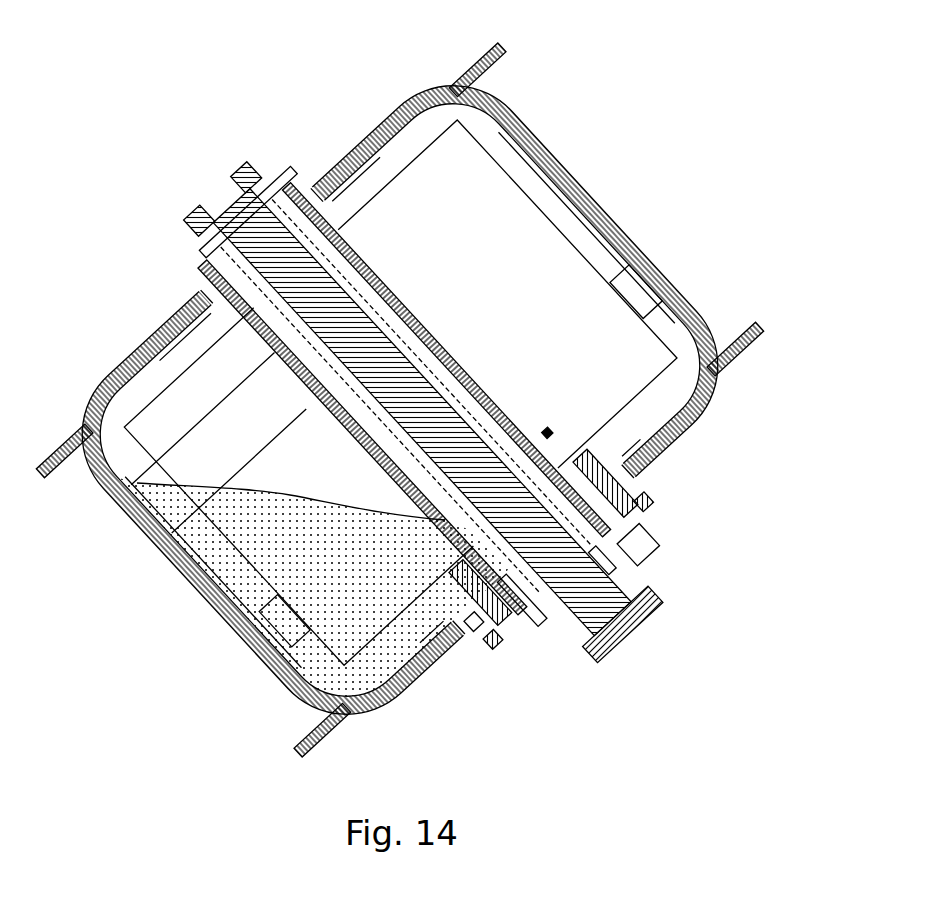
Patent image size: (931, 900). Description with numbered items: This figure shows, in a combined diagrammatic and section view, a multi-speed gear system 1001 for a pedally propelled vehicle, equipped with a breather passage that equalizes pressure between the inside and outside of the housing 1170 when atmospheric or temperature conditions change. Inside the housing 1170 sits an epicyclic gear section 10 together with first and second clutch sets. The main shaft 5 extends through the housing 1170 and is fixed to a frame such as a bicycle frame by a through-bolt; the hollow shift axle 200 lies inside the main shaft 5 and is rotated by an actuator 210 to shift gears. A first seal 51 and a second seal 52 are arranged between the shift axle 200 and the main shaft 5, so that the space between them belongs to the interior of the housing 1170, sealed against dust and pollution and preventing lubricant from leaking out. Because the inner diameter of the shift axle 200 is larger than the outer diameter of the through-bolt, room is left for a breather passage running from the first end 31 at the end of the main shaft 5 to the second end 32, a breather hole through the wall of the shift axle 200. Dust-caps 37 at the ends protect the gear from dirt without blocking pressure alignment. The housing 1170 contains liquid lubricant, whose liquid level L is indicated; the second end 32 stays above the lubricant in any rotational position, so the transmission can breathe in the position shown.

The multi-speed gear system 1001 is at (89, 91).
The housing 1170 is at (366, 132).
The epicyclic gear section 10 is at (494, 206).
The liquid level L is at (114, 398).
The second end 32 is at (215, 586).
The first seal 51 is at (548, 452).
The shift axle 200 is at (527, 600).
The main shaft 5 is at (515, 613).
The actuator 210 is at (657, 543).
The second seal 52 is at (340, 240).
The dust-cap 37 is at (283, 212).
The first end 31 is at (205, 217).